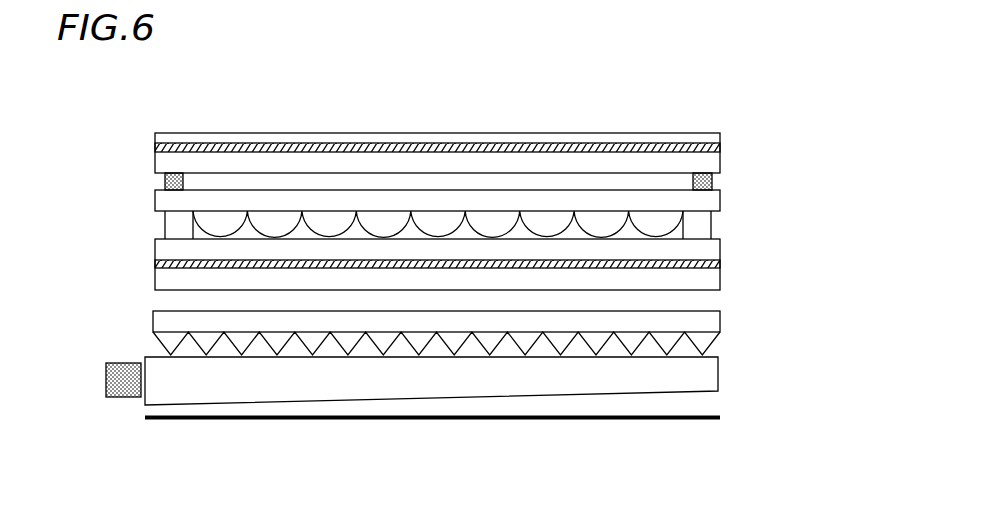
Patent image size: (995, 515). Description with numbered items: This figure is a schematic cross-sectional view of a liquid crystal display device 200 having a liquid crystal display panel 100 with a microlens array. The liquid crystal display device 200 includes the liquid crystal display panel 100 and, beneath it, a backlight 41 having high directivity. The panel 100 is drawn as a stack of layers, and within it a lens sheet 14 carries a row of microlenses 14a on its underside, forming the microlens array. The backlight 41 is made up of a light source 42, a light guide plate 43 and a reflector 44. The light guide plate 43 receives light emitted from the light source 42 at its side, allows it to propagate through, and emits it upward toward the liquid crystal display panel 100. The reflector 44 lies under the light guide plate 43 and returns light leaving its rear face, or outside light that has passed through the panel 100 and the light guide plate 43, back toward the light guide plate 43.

The liquid crystal display device 200 is at (723, 112).
The liquid crystal display panel 100 is at (823, 133).
The lens sheet 14 is at (491, 236).
The lens 14a is at (666, 223).
The backlight 41 is at (68, 323).
The light source 42 is at (125, 363).
The light guide plate 43 is at (147, 398).
The reflector 44 is at (193, 420).